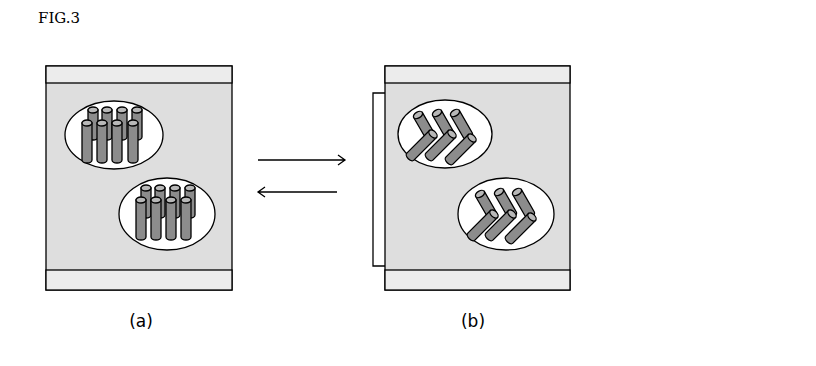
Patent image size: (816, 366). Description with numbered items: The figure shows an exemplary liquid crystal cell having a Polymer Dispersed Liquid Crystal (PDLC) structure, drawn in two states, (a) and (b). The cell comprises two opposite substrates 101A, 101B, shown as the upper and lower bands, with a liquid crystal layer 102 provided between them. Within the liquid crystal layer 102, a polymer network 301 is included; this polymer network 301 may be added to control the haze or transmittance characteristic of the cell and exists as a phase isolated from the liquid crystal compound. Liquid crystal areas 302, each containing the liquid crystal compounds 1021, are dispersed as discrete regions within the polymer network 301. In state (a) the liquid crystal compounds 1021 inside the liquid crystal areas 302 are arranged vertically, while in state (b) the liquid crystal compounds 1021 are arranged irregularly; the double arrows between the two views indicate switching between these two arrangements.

The substrate 101A is at (565, 73).
The substrate 101B is at (563, 282).
The liquid crystal layer 102 is at (357, 179).
The polymer network 301 is at (552, 108).
The liquid crystal area 302 is at (480, 133).
The liquid crystal compound 1021 is at (522, 198).